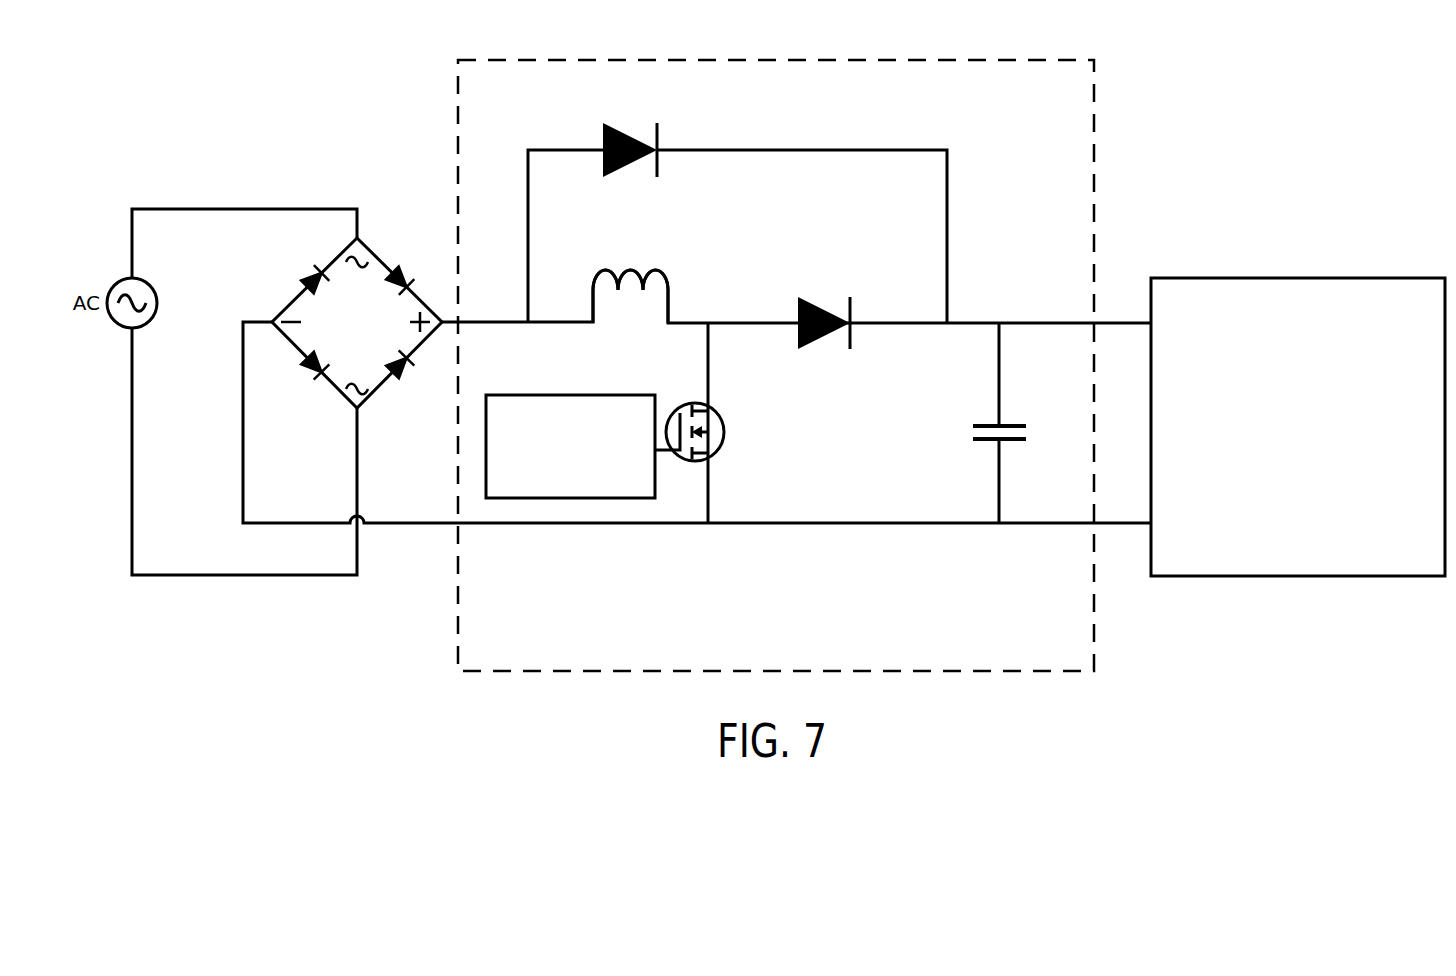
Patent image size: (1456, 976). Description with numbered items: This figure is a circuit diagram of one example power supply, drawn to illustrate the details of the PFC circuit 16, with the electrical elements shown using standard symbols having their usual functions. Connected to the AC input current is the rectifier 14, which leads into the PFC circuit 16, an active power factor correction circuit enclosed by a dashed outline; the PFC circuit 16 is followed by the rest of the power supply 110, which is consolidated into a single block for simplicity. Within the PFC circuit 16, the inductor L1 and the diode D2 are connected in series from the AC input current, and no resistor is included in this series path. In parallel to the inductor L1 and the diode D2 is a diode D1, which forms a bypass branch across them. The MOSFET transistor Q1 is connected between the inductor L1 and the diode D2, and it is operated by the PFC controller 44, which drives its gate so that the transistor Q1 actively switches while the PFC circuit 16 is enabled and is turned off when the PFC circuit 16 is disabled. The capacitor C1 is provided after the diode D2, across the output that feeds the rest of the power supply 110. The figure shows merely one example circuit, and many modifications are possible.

The rectifier 14 is at (262, 287).
The PFC circuit 16 is at (776, 351).
The PFC controller 44 is at (570, 446).
The power supply 110 is at (1298, 427).
The diode D1 is at (630, 162).
The inductor L1 is at (630, 277).
The diode D2 is at (824, 337).
The MOSFET transistor Q1 is at (689, 415).
The capacitor C1 is at (978, 432).